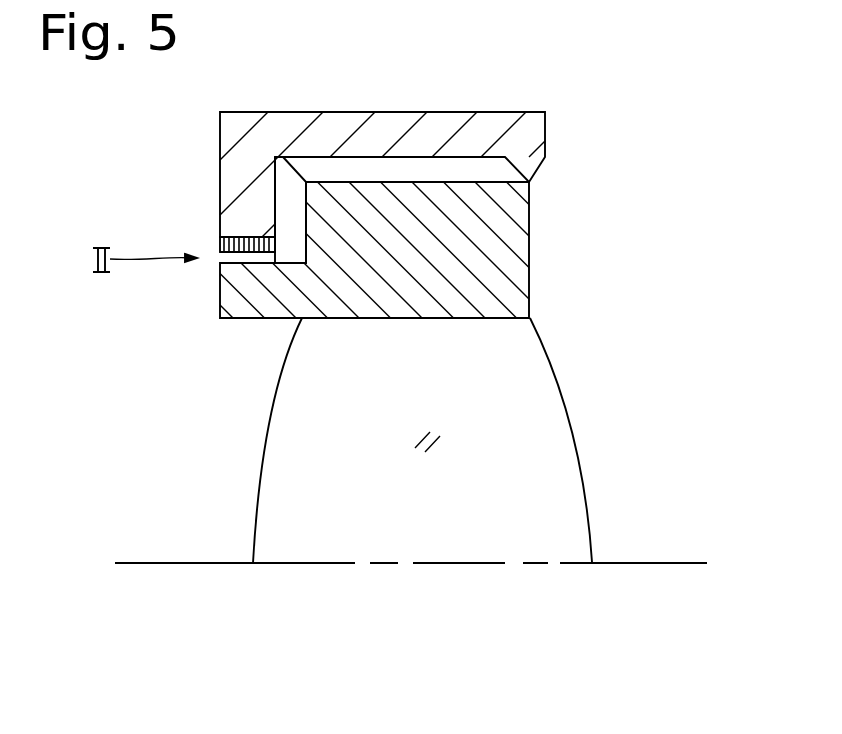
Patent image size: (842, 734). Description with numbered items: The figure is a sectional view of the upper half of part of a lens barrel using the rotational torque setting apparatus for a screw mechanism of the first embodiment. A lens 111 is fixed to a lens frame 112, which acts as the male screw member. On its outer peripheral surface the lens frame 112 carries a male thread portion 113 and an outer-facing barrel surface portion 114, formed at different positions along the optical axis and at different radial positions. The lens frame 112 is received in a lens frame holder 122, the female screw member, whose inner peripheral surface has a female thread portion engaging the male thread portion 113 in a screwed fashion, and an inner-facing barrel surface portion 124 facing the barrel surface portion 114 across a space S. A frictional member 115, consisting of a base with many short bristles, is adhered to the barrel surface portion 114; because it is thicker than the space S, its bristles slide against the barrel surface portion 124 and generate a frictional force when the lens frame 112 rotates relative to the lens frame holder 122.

The lens 111 is at (538, 433).
The lens frame 112 is at (498, 238).
The male thread portion 113 is at (502, 171).
The barrel surface portion 114 is at (236, 259).
The frictional member 115 is at (265, 256).
The lens frame holder 122 is at (498, 128).
The barrel surface portion 124 is at (220, 245).